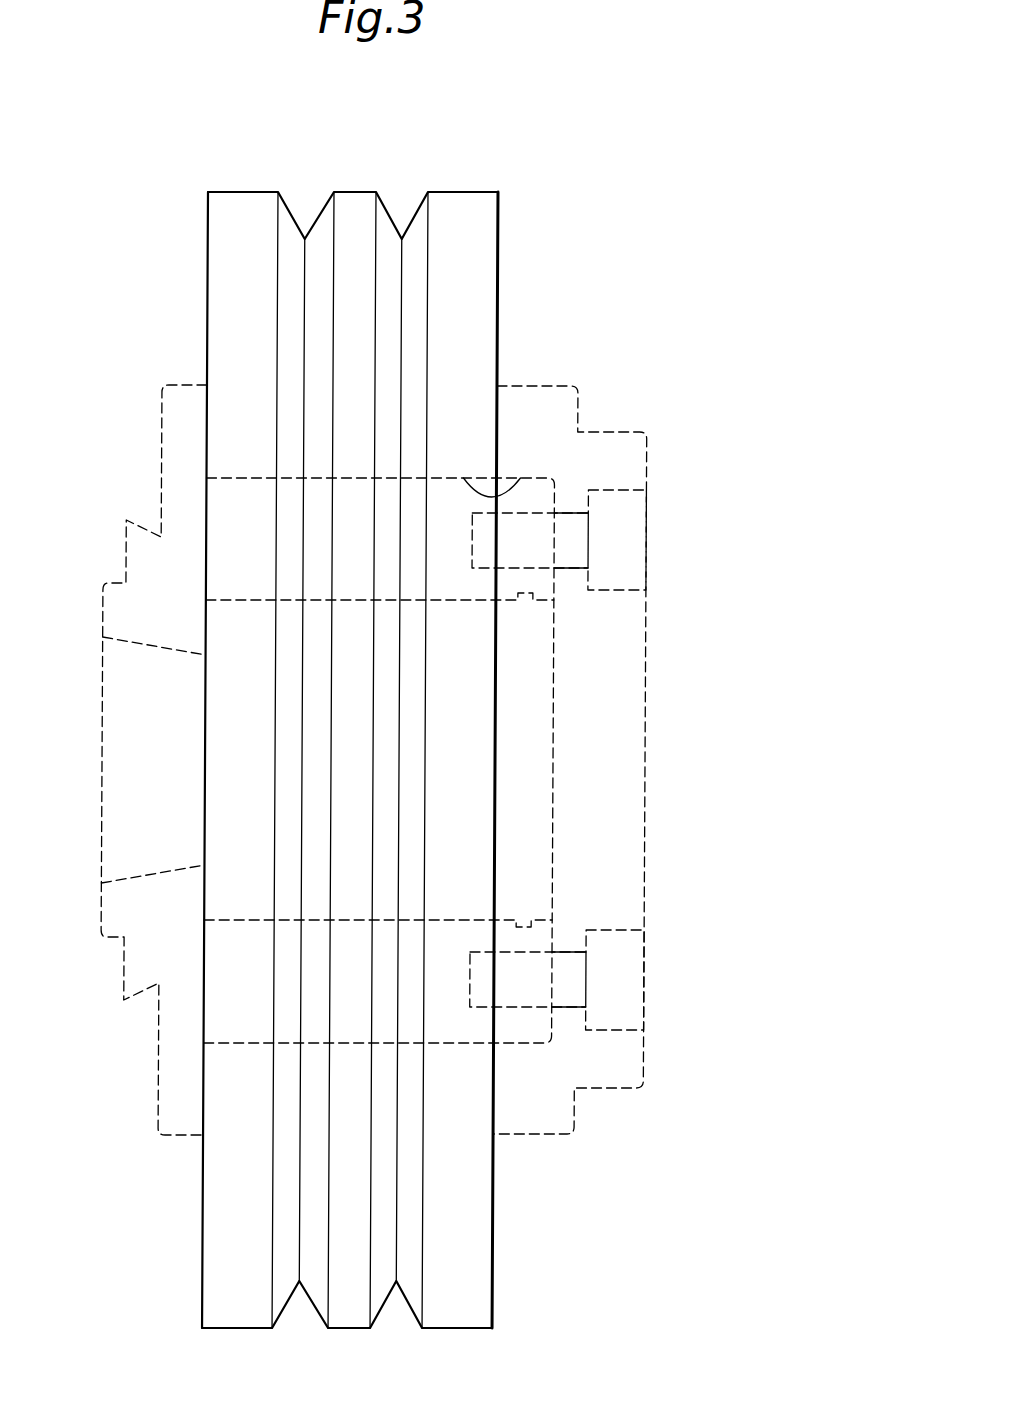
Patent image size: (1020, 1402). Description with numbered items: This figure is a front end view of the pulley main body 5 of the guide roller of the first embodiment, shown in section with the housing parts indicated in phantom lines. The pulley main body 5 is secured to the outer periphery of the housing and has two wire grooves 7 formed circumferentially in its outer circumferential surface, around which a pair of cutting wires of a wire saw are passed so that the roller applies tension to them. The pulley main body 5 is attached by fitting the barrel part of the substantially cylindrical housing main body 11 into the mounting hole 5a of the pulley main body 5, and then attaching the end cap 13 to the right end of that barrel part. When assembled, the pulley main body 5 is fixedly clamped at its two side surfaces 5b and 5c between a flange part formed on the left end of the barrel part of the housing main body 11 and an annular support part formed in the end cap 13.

The pulley main body 5 is at (401, 712).
The mounting hole 5a is at (520, 478).
The side surface 5b is at (208, 237).
The side surface 5c is at (498, 220).
The wire grooves 7 is at (385, 203).
The housing main body 11 is at (162, 440).
The end cap 13 is at (648, 460).